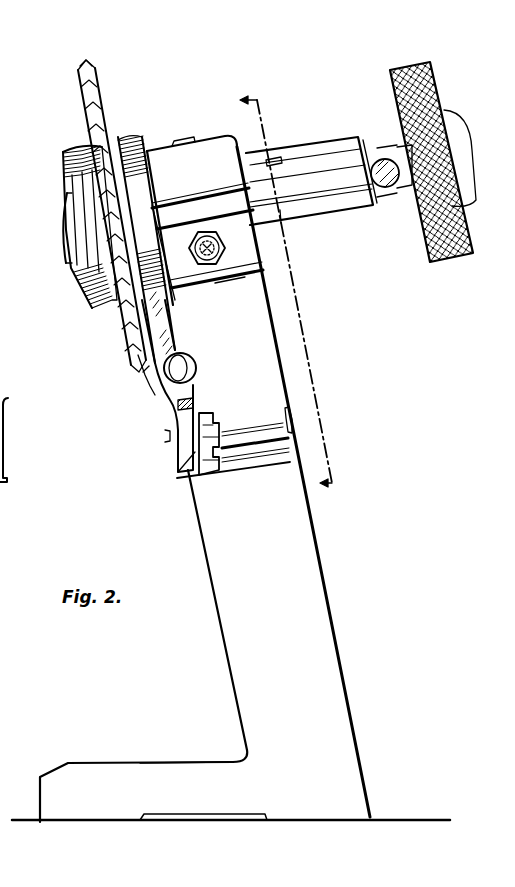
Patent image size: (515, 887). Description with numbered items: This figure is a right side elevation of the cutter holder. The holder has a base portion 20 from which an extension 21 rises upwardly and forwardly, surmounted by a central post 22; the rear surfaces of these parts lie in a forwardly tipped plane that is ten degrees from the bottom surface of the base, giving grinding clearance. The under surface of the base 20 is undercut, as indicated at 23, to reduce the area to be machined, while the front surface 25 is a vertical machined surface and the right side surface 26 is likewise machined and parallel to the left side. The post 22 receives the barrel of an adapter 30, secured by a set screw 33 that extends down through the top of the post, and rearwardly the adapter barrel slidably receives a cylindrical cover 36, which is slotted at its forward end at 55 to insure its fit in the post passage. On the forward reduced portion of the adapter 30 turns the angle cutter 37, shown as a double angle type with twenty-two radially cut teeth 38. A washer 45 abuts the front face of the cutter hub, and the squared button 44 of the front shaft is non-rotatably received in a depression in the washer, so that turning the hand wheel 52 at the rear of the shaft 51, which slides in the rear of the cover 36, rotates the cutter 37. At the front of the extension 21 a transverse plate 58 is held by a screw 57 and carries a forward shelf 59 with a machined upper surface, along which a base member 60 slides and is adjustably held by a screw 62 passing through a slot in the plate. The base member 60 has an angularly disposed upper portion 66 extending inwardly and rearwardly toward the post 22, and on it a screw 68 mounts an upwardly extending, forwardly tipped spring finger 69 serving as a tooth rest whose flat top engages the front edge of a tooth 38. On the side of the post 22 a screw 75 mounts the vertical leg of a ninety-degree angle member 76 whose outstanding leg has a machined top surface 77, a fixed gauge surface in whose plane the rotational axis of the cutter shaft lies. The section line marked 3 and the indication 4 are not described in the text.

The section line 3- 3 is at (275, 296).
The partial numeral (cut off at sheet edge) 4 is at (8, 506).
The base portion 20 is at (111, 755).
The extension 21 is at (305, 603).
The central post 22 is at (157, 160).
The undercut 23 is at (211, 813).
The front surface 25 is at (40, 800).
The right side surface 26 is at (165, 777).
The adapter 30 is at (125, 132).
The set screw 33 is at (183, 138).
The cylindrical cover 36 is at (334, 193).
The angle cutter 37 is at (82, 145).
The teeth 38 is at (78, 82).
The button 44 is at (67, 223).
The washer 45 is at (72, 165).
The shaft 51 is at (383, 187).
The hand wheel 52 is at (437, 83).
The slot 55 is at (275, 162).
The screw 57 is at (292, 418).
The transverse plate 58 is at (195, 452).
The shelf 59 is at (180, 478).
The base member 60 is at (172, 420).
The screw 62 is at (217, 428).
The upper portion 66 is at (150, 378).
The screw 68 is at (193, 368).
The spring finger 69 is at (150, 300).
The screw 75 is at (204, 256).
The angle member 76 is at (224, 270).
The top surface 77 is at (190, 203).